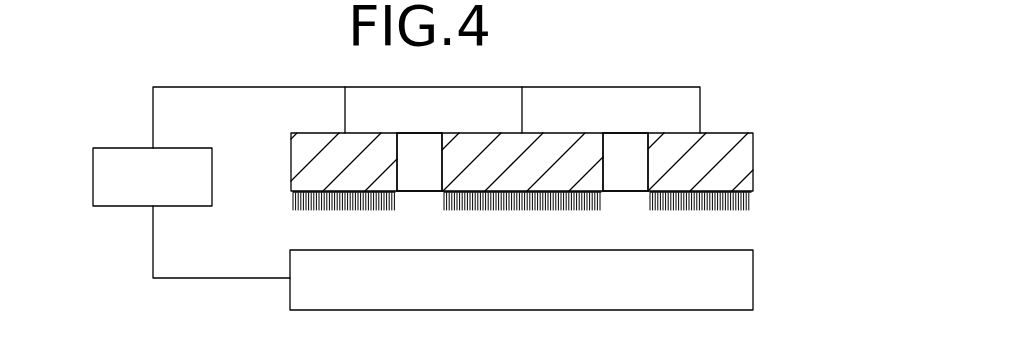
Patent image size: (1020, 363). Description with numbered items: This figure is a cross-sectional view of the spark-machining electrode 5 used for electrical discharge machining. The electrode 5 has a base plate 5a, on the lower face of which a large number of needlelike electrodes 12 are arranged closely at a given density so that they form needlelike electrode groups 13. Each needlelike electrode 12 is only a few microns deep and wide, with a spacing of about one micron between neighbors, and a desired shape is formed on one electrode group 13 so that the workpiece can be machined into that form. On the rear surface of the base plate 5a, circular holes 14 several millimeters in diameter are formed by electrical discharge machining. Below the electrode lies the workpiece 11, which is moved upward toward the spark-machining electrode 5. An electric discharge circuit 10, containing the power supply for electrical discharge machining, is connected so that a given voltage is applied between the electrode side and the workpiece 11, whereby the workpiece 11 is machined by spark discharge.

The electric discharge circuit 10 is at (115, 155).
The spark-machining electrode 5 is at (726, 117).
The base plate 5a is at (755, 150).
The circular holes 14 is at (441, 158).
The needlelike electrodes 12 is at (548, 206).
The needlelike electrode groups 13 is at (291, 208).
The workpiece 11 is at (745, 298).